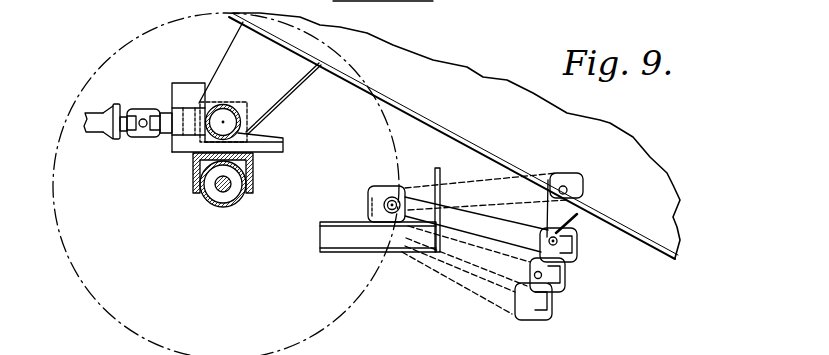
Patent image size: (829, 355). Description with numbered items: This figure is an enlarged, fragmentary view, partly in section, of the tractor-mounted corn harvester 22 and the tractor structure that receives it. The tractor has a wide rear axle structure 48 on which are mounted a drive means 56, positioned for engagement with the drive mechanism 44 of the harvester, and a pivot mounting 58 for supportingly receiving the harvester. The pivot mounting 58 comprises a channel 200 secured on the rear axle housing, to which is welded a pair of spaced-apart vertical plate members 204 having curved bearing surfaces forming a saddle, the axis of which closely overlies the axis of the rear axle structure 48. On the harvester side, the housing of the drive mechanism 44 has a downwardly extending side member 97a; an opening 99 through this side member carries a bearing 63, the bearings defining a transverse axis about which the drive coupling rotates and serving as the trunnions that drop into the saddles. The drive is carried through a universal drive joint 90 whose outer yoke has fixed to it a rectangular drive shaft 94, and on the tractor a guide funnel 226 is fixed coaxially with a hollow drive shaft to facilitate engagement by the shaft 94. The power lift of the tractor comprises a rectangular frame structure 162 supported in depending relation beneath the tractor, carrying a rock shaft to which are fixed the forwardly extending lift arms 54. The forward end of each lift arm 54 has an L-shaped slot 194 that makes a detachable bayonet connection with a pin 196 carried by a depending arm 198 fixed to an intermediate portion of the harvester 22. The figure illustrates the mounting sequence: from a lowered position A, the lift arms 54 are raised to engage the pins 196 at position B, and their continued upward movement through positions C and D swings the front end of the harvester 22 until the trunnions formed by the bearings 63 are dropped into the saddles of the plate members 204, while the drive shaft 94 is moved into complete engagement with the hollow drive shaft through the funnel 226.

The corn harvester 22 is at (504, 123).
The drive mechanism 44 is at (300, 77).
The rear axle structure 48 is at (212, 205).
The lift arms 54 is at (477, 238).
The drive means 56 is at (97, 132).
The pivot mounting 58 is at (186, 91).
The bearing 63 is at (223, 106).
The universal drive joint 90 is at (140, 109).
The drive shaft 94 is at (118, 139).
The side member 97a is at (233, 45).
The opening 99 is at (243, 120).
The rectangular frame structure 162 is at (347, 240).
The L-shaped slot 194 is at (548, 180).
The pin 196 is at (548, 232).
The depending arm 198 is at (578, 212).
The channel 200 is at (252, 182).
The vertical plate member 204 is at (285, 152).
The guide funnel 226 is at (117, 111).
The position A is at (543, 317).
The position B is at (562, 293).
The position C is at (573, 247).
The position D is at (583, 187).